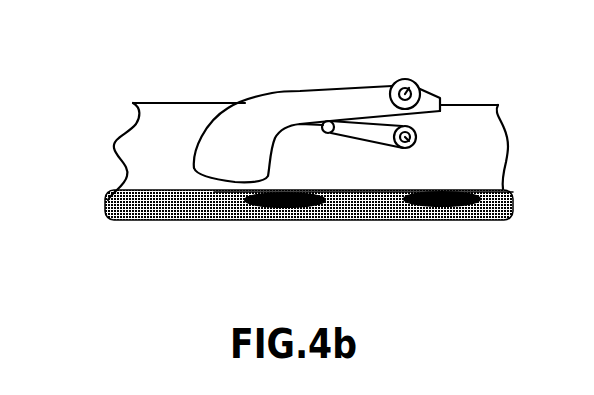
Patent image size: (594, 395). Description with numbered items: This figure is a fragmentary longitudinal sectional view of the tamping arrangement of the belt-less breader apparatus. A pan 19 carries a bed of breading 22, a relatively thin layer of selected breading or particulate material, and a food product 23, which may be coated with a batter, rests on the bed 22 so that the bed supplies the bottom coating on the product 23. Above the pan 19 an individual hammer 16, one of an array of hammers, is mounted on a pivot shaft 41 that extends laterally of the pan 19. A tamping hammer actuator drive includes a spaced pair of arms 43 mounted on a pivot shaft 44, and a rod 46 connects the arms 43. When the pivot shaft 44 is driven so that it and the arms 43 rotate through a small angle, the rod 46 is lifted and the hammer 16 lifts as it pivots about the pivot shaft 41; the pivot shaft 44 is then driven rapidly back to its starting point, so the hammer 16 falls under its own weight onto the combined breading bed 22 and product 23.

The hammer 16 is at (233, 135).
The rod 46 is at (324, 121).
The pivot shaft 41 is at (405, 92).
The arm 43 is at (340, 119).
The pivot shaft 44 is at (390, 128).
The bed of breading 22 is at (132, 208).
The pan 19 is at (243, 208).
The food product 23 is at (318, 206).